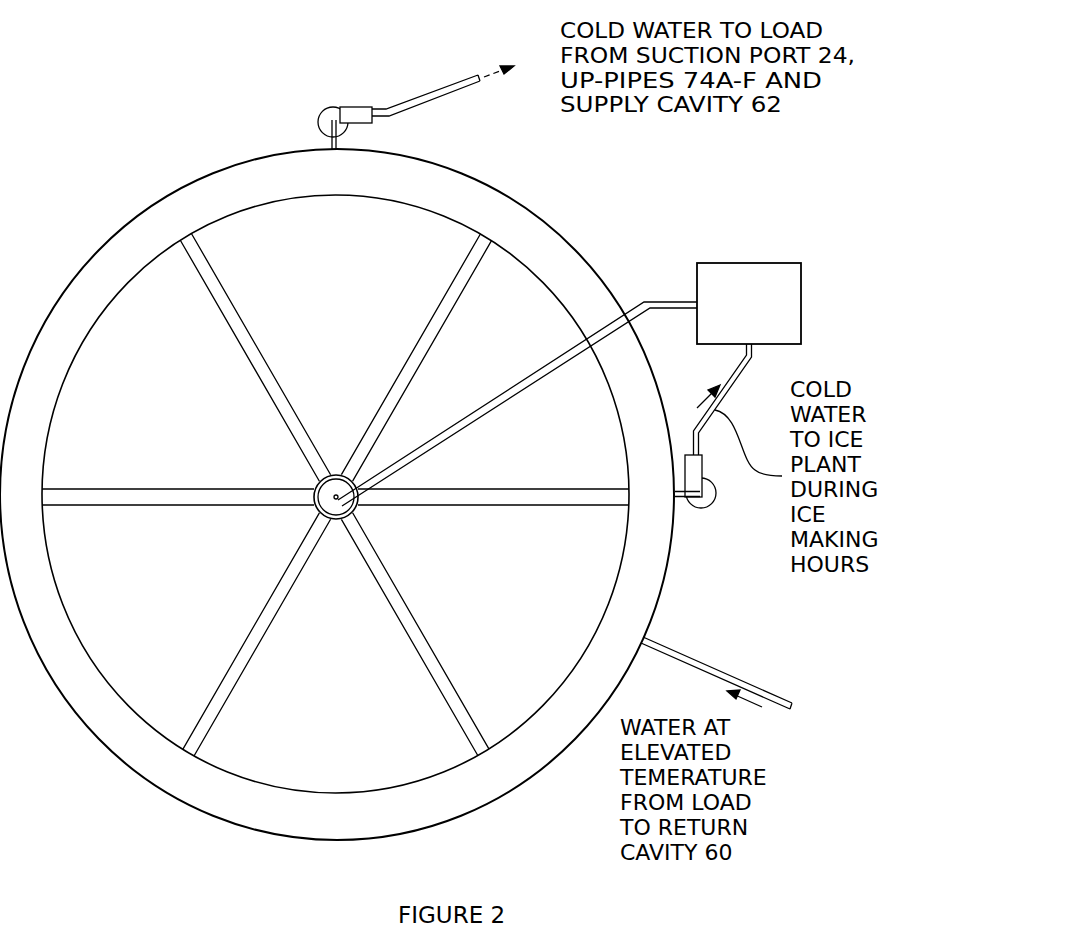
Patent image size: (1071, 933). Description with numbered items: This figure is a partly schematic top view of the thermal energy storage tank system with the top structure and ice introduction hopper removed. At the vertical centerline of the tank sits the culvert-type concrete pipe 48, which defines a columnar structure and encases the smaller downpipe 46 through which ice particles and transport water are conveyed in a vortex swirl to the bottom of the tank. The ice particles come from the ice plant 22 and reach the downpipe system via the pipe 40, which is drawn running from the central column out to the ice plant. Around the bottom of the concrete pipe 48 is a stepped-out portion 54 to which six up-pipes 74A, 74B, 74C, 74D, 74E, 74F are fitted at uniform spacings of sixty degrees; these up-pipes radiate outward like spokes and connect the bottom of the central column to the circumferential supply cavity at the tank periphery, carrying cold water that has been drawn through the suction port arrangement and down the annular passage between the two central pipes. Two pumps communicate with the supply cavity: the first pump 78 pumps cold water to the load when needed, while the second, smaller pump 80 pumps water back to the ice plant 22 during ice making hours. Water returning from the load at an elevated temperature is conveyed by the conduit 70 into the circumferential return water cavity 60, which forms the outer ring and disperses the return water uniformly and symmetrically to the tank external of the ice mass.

The ice plant 22 is at (748, 263).
The pipe 40 is at (572, 349).
The pipe 46 is at (316, 508).
The concrete pipe 48 is at (336, 475).
The stepped-out portion 54 is at (316, 486).
The circumferential return water cavity 60 is at (503, 213).
The conduit 70 is at (722, 668).
The up-pipe 74A is at (65, 489).
The up-pipe 74B is at (213, 272).
The up-pipe 74C is at (458, 272).
The up-pipe 74D is at (535, 489).
The up-pipe 74E is at (465, 735).
The up-pipe 74F is at (210, 738).
The first pump 78 is at (351, 107).
The second pump 80 is at (706, 509).